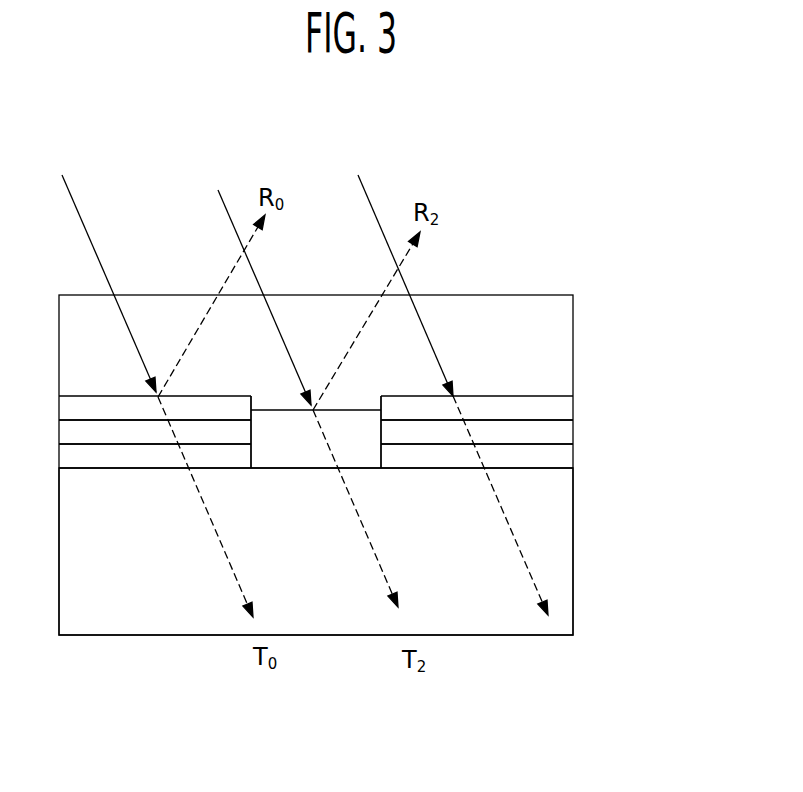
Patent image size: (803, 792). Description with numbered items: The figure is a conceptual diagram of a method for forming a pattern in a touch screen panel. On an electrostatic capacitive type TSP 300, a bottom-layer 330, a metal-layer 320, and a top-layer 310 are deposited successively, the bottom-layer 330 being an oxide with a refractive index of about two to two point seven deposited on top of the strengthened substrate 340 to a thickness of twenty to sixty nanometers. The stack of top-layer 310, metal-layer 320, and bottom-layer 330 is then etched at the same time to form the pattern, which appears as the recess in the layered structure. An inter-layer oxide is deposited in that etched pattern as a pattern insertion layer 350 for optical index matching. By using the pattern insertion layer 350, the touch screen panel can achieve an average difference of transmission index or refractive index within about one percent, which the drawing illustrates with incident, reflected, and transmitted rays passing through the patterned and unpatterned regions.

The electrostatic capacitive type TSP 300 is at (588, 348).
The top-layer 310 is at (588, 407).
The metal-layer 320 is at (588, 432).
The bottom-layer 330 is at (588, 457).
The strengthened substrate 340 is at (588, 562).
The pattern insertion layer 350 is at (346, 398).